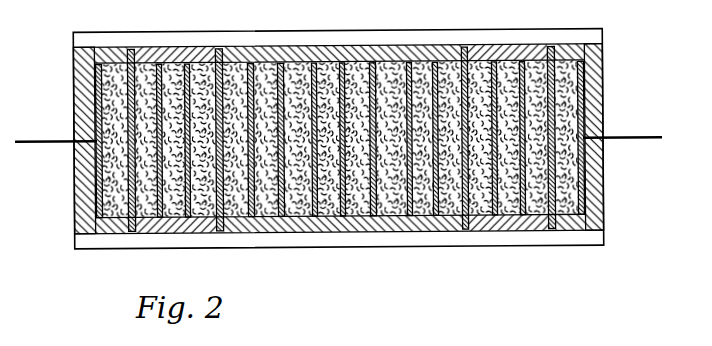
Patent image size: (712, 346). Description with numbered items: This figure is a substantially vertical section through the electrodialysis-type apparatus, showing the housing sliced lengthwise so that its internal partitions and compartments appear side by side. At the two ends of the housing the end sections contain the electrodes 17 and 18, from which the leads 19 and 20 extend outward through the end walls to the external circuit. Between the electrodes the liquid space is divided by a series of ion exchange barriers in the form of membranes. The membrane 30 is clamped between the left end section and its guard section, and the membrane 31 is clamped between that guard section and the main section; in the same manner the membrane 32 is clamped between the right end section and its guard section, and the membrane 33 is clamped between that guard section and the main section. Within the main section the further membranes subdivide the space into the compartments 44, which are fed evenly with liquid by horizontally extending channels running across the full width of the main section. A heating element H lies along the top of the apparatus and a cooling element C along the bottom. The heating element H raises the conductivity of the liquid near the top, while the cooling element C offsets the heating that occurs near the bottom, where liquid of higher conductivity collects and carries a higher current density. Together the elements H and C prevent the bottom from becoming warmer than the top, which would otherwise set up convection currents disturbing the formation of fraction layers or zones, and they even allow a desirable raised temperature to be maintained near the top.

The electrode 17 is at (114, 140).
The electrode 18 is at (566, 137).
The lead 19 is at (40, 135).
The lead 20 is at (630, 139).
The membrane 30 is at (131, 220).
The membrane 31 is at (222, 218).
The membrane 32 is at (547, 216).
The membrane 33 is at (460, 216).
The compartments 44 is at (240, 150).
The heating element H is at (565, 36).
The cooling element C is at (502, 239).